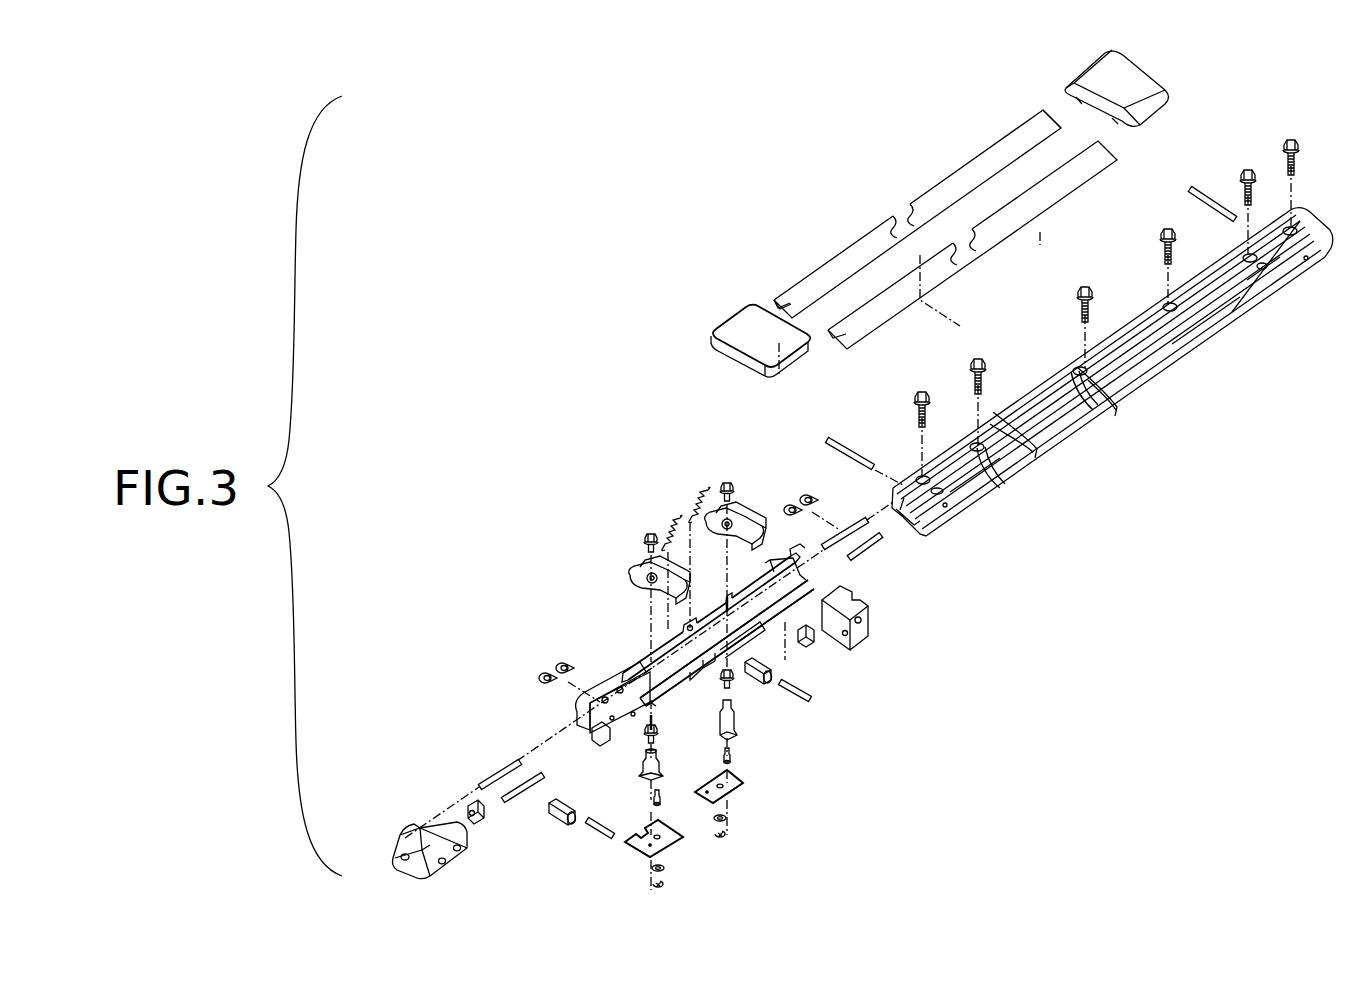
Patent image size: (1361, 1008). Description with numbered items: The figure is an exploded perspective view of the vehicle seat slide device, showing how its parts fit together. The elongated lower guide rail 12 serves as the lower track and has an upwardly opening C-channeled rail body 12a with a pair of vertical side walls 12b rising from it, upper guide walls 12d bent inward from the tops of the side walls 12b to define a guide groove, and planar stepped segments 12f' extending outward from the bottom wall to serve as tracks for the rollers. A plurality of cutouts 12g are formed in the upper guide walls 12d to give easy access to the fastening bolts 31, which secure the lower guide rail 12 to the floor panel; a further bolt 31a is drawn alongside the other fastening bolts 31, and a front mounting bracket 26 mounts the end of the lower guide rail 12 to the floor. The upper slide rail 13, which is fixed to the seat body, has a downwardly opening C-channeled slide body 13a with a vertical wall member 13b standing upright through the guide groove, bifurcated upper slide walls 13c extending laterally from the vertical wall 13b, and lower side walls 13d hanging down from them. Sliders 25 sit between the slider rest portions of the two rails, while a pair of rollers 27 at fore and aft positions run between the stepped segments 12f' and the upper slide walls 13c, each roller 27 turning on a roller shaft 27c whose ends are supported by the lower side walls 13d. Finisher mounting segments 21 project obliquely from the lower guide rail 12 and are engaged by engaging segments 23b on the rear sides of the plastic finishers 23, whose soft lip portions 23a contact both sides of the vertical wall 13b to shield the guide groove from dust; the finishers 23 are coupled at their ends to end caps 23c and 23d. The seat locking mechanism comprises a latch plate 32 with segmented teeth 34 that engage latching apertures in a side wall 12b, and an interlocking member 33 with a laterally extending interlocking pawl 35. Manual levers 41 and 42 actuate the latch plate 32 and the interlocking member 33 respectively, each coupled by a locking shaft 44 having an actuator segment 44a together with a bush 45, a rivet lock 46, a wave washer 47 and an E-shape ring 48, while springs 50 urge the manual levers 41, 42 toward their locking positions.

The lower guide rail 12 is at (1112, 372).
The rail body 12a is at (1278, 292).
The vertical side walls 12b is at (1224, 346).
The upper guide walls 12d is at (1296, 296).
The planar stepped segments 12f' is at (950, 563).
The cutouts 12g is at (1092, 461).
The upper slide rail 13 is at (691, 637).
The slide body 13a is at (763, 650).
The vertical wall member 13b is at (711, 614).
The upper slide walls 13c is at (750, 723).
The lower side walls 13d is at (815, 658).
The finisher mounting segments 21 is at (997, 504).
The finishers 23 is at (940, 229).
The soft lip portions 23a is at (943, 199).
The engaging segments 23b is at (759, 261).
The end cap 23c is at (742, 297).
The end cap 23d is at (1152, 83).
The sliders 25 is at (852, 495).
The mounting bracket 26 is at (439, 865).
The rollers 27 is at (680, 768).
The roller shaft 27c is at (592, 857).
The fastening bolts 31 is at (1080, 256).
The bolt 31a is at (957, 343).
The latch plate 32 is at (705, 850).
The interlocking member 33 is at (763, 780).
The segmented teeth 34 is at (621, 888).
The interlocking pawl 35 is at (772, 798).
The manual lever 41 is at (642, 544).
The manual lever 42 is at (736, 496).
The locking shaft 44 is at (685, 691).
The actuator segment 44a is at (676, 766).
The bush 45 is at (674, 730).
The rivet lock 46 is at (712, 790).
The wave washer 47 is at (719, 844).
The E-shape ring 48 is at (720, 870).
The springs 50 is at (678, 489).